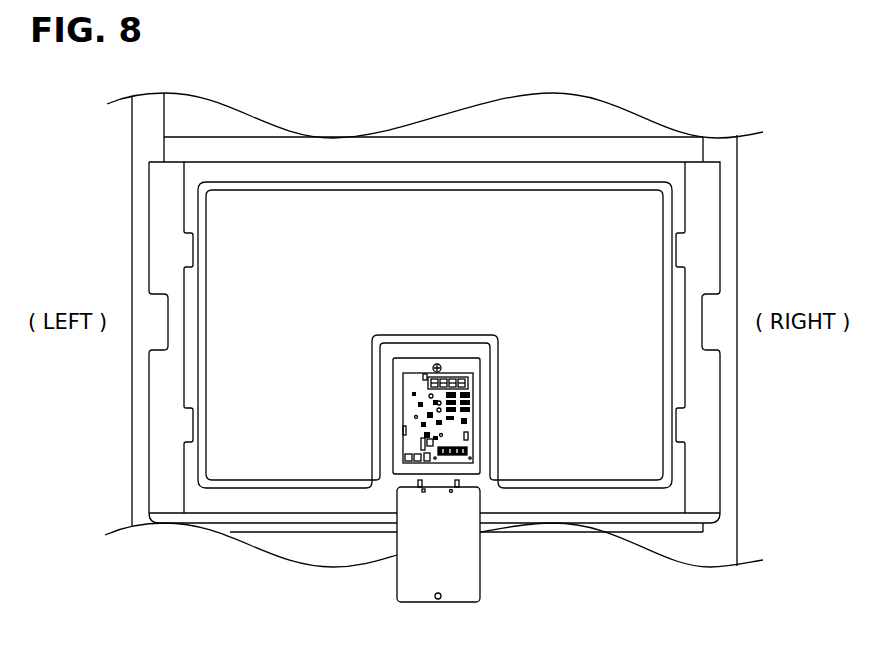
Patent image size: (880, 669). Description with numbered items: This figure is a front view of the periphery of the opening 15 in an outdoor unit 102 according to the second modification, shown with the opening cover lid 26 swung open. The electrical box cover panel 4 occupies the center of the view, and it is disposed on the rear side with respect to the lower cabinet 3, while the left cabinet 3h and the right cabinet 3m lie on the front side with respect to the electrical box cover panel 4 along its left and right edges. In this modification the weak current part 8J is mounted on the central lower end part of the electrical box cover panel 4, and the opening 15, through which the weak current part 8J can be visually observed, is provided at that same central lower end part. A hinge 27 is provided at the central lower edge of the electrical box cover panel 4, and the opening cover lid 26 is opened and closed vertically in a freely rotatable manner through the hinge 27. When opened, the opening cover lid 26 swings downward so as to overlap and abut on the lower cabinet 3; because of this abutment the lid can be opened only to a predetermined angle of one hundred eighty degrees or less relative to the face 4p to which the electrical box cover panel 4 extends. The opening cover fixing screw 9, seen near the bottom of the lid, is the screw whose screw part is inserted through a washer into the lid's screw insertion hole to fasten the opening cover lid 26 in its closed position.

The outdoor unit 102 is at (763, 121).
The lower cabinet 3 is at (322, 552).
The left cabinet 3h is at (170, 395).
The right cabinet 3m is at (705, 252).
The electrical box cover panel 4 is at (247, 423).
The face 4p is at (388, 403).
The weak current part 8J is at (473, 403).
The opening 15 is at (470, 447).
The hinge 27 is at (438, 487).
The opening cover lid 26 is at (465, 577).
The opening cover fixing screw 9 is at (438, 600).